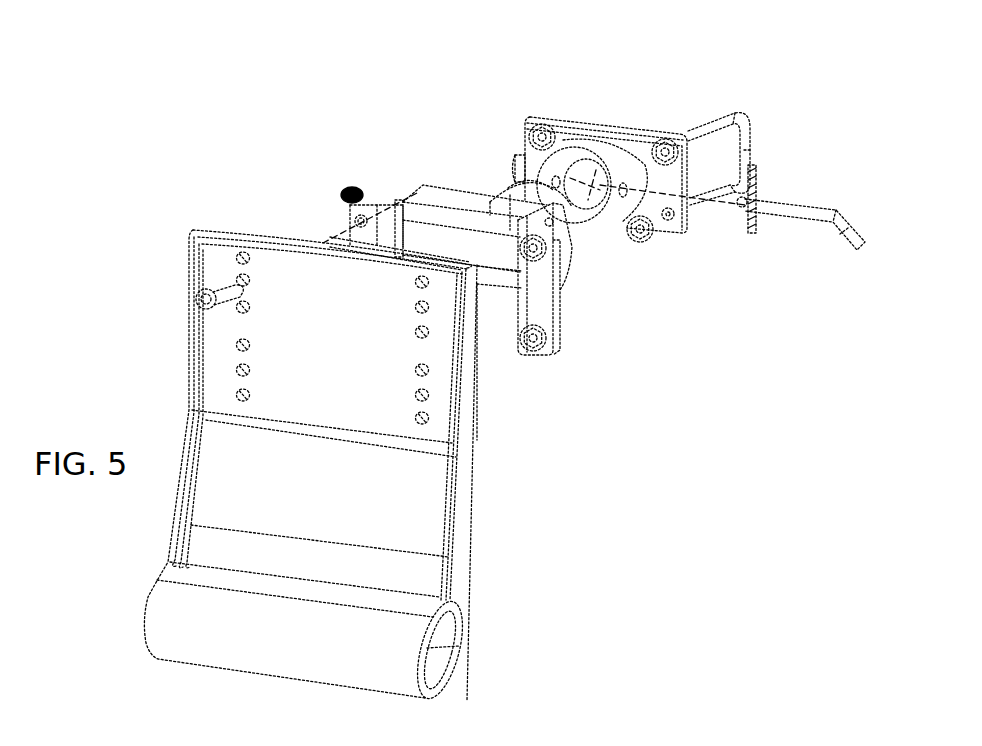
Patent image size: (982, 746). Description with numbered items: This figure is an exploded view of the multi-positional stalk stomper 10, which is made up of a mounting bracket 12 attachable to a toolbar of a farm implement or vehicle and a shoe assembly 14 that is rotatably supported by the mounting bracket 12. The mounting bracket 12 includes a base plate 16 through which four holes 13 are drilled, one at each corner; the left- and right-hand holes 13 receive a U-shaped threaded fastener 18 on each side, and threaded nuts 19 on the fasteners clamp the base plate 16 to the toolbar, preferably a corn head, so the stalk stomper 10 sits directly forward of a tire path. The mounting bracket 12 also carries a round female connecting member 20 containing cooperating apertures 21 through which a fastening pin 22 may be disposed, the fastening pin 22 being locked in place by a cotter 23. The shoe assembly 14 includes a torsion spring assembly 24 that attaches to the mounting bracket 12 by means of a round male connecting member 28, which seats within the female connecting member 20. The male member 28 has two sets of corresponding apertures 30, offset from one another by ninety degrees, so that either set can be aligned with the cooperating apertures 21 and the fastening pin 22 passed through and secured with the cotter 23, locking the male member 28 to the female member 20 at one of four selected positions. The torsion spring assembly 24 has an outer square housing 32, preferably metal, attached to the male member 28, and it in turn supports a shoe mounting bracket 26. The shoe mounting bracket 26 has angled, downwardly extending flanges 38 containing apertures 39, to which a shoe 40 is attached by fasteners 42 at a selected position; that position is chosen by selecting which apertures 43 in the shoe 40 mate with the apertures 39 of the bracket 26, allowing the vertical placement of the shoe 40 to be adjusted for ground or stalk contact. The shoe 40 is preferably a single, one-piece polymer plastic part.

The multi-positional stalk stomper 10 is at (662, 428).
The mounting bracket 12 is at (557, 112).
The holes 13 is at (672, 217).
The shoe assembly 14 is at (340, 165).
The base plate 16 is at (667, 135).
The U-shaped threaded fastener 18 is at (737, 125).
The threaded nuts 19 is at (645, 242).
The female connecting member 20 is at (590, 148).
The cooperating apertures 21 is at (625, 183).
The fastening pin 22 is at (808, 210).
The cotter 23 is at (506, 118).
The torsion spring assembly 24 is at (406, 192).
The shoe mounting bracket 26 is at (566, 298).
The male connecting member 28 is at (490, 200).
The corresponding apertures 30 is at (508, 185).
The outer square housing 32 is at (495, 290).
The flanges 38 is at (355, 219).
The apertures 39 is at (355, 212).
The shoe 40 is at (466, 562).
The fasteners 42 is at (201, 298).
The apertures 43 is at (410, 307).